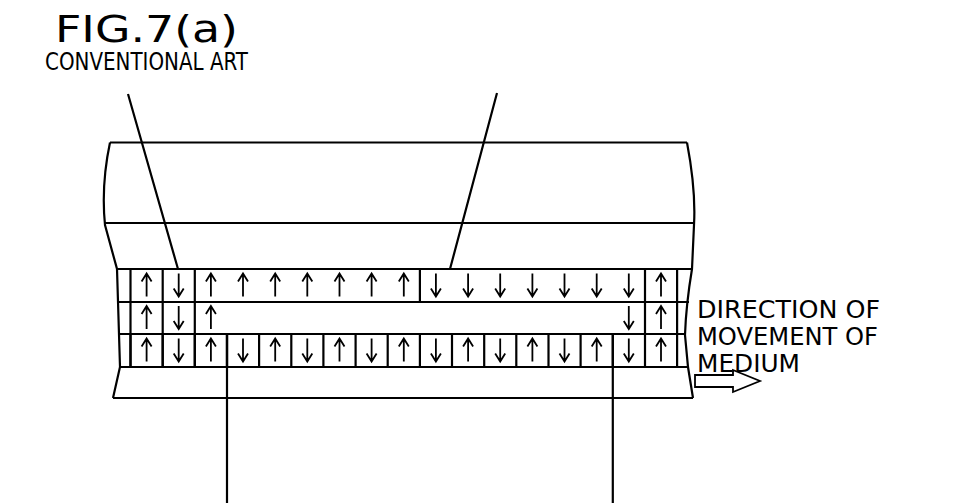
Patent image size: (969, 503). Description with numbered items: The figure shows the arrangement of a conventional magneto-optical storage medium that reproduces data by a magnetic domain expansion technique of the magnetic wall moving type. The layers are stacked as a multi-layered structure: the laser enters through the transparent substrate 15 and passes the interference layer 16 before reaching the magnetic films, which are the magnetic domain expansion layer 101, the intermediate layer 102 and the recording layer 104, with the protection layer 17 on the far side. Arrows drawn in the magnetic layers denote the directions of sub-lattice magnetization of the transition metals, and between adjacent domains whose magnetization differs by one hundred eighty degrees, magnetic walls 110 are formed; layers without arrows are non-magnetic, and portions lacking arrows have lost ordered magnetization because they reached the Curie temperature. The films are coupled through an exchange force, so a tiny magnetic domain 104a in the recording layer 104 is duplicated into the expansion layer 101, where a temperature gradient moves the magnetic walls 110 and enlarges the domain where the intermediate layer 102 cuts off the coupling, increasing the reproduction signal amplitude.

The transparent substrate 15 is at (686, 185).
The interference layer 16 is at (686, 249).
The magnetic domain expansion layer 101 is at (118, 288).
The intermediate layer 102 is at (120, 320).
The recording layer 104 is at (124, 352).
The magnetic domain 104a is at (215, 368).
The magnetic wall 110 is at (157, 368).
The protection layer 17 is at (672, 396).